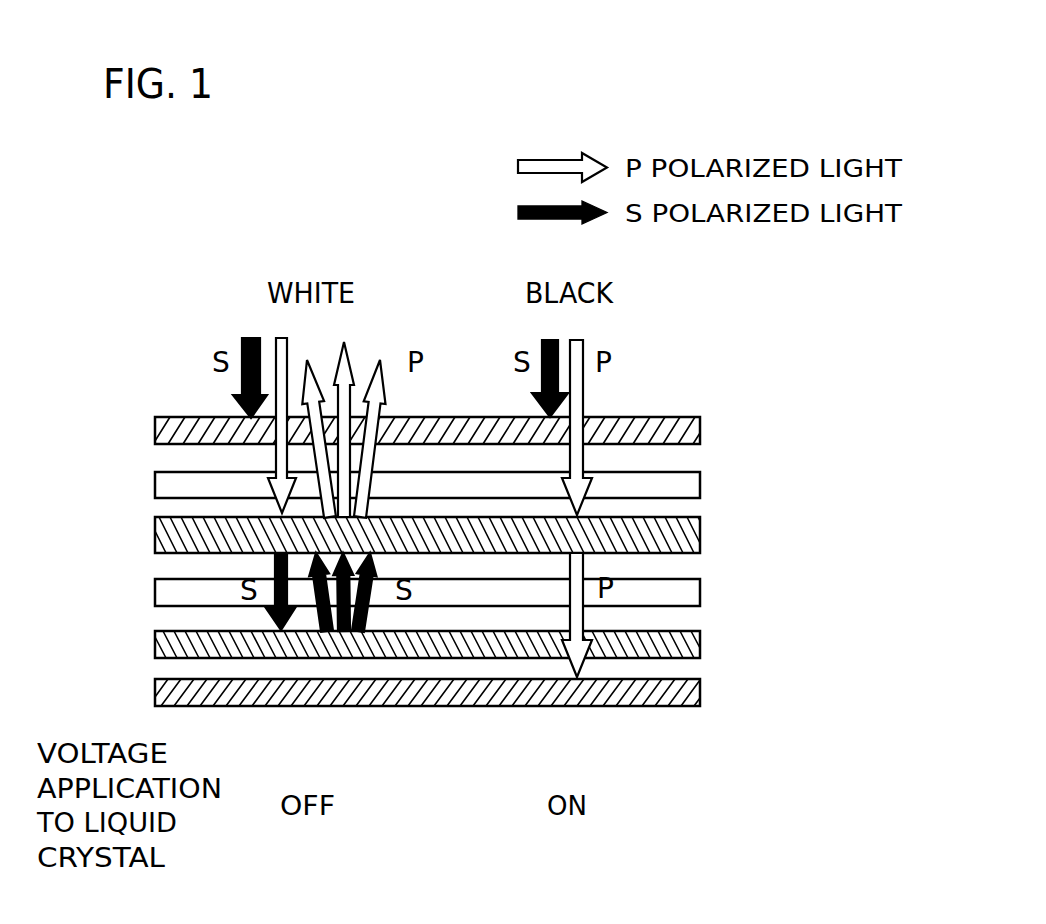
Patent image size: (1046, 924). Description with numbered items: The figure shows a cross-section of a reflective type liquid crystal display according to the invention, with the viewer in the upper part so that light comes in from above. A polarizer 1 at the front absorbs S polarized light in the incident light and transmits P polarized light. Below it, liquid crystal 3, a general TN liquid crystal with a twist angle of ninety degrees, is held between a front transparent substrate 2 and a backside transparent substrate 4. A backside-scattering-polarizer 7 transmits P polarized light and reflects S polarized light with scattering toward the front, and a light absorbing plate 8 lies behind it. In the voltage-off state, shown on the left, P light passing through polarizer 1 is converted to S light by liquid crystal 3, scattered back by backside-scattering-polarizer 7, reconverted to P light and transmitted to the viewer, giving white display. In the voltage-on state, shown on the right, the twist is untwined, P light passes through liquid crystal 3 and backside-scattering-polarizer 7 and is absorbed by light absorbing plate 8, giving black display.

The polarizer 1 is at (693, 430).
The transparent substrate 2 is at (693, 484).
The liquid crystal 3 is at (693, 534).
The transparent substrate 4 is at (693, 593).
The backside-scattering-polarizer 7 is at (693, 644).
The light absorbing plate 8 is at (693, 691).